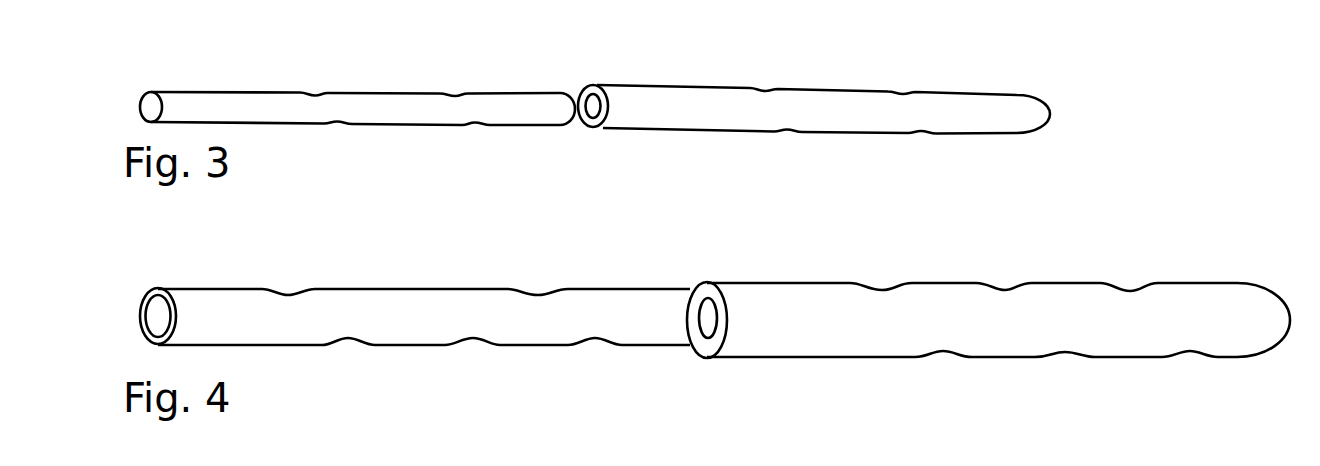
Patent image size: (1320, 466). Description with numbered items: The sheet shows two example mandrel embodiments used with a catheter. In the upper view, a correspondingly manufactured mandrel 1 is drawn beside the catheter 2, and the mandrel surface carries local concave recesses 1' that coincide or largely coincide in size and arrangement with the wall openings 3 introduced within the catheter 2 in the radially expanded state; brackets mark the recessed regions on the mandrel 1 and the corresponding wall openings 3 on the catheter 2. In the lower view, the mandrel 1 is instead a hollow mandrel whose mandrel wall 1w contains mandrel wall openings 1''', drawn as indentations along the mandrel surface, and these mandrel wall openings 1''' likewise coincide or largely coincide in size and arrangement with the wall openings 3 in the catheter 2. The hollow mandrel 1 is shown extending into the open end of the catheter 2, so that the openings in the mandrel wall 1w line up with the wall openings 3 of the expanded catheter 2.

In FIG. 4, the mandrel 1 is at (415, 287).
In FIG. 3, the local concave recesses 1' is at (357, 113).
In FIG. 4, the mandrel wall openings 1''' is at (410, 326).
In FIG. 4, the mandrel wall 1w is at (149, 289).
In FIG. 3, the catheter 2 is at (658, 88).
In FIG. 4, the catheter 2 is at (1173, 306).
In FIG. 3, the wall openings 3 is at (898, 93).
In FIG. 4, the wall openings 3 is at (1135, 288).